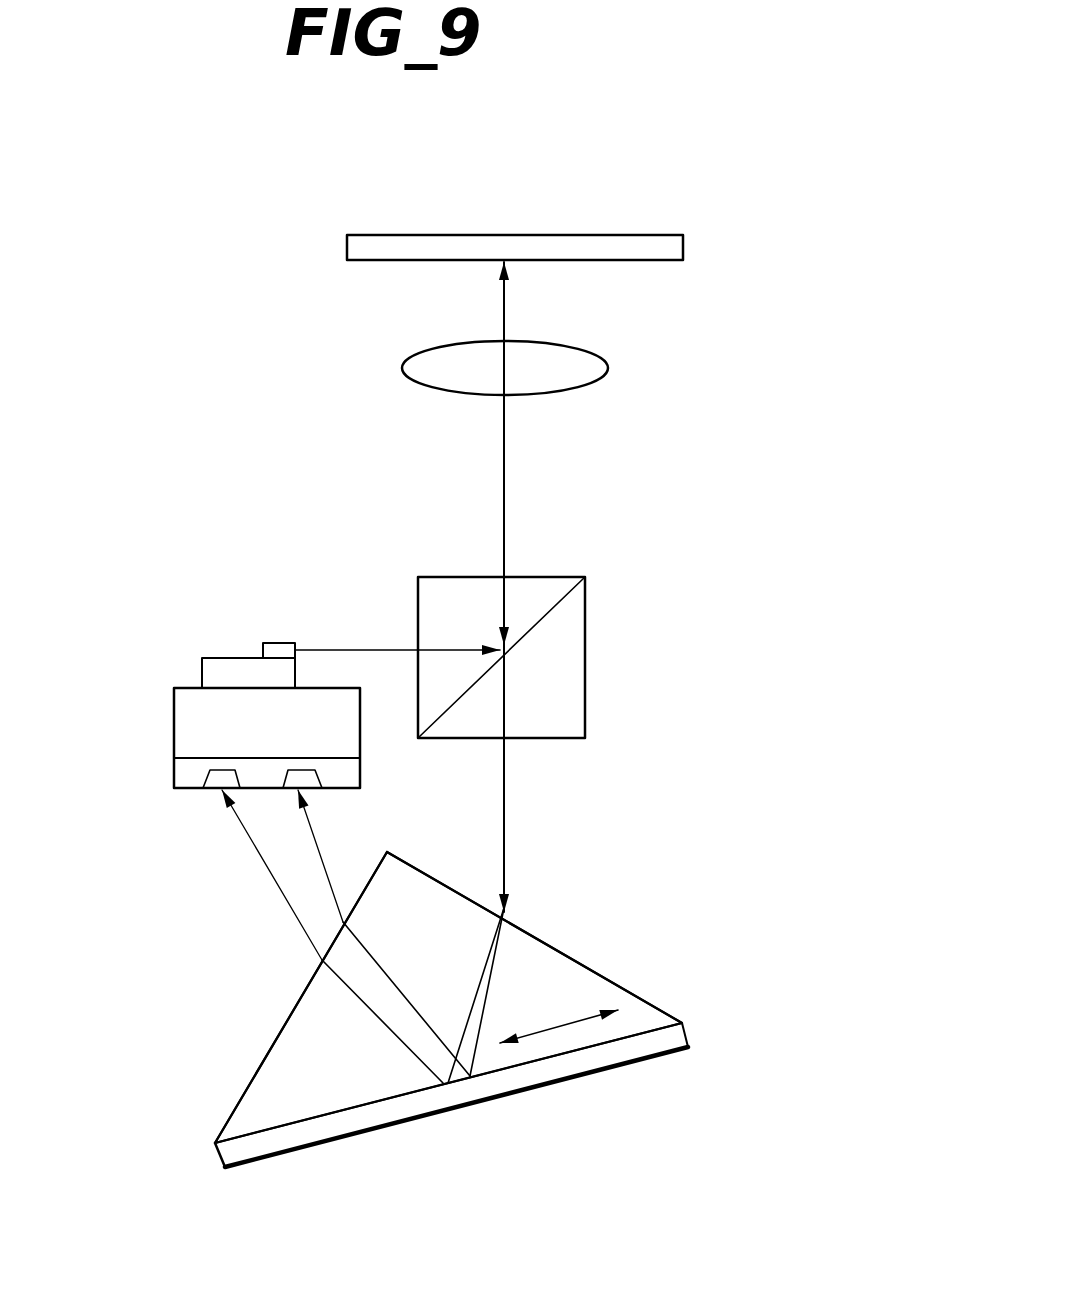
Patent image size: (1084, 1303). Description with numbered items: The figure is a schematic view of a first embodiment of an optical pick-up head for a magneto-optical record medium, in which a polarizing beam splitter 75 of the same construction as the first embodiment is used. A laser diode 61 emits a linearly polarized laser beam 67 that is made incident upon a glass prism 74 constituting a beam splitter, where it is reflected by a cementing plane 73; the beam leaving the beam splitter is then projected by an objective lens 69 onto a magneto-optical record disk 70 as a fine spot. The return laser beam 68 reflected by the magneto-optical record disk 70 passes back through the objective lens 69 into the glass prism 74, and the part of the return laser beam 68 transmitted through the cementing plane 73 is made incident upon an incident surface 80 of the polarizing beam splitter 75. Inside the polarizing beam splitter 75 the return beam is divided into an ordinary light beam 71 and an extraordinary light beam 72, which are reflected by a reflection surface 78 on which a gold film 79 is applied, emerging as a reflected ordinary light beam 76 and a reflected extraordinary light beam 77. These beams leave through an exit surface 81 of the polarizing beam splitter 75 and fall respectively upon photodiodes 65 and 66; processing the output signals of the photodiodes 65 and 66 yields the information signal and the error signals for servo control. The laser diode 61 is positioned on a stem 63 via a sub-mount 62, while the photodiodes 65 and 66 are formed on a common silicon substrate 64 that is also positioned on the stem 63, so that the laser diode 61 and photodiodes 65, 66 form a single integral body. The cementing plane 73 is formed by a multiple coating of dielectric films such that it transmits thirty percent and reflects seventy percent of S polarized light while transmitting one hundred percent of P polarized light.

The laser diode 61 is at (280, 643).
The sub-mount 62 is at (205, 672).
The stem 63 is at (188, 728).
The silicon substrate 64 is at (187, 773).
The photodiode 65 is at (214, 778).
The photodiode 66 is at (310, 780).
The laser beam 67 is at (360, 650).
The return laser beam 68 is at (504, 463).
The objective lens 69 is at (605, 367).
The magneto-optical record disk 70 is at (683, 247).
The ordinary light beam 71 is at (473, 997).
The extraordinary light beam 72 is at (487, 997).
The cementing plane 73 is at (552, 613).
The glass prism 74 is at (548, 595).
The polarizing beam splitter 75 is at (620, 977).
The ordinary light beam 76 is at (400, 1037).
The extraordinary light beam 77 is at (385, 977).
The reflection surface 78 is at (643, 1030).
The gold film 79 is at (597, 1068).
The incident surface 80 is at (527, 932).
The exit surface 81 is at (268, 1052).